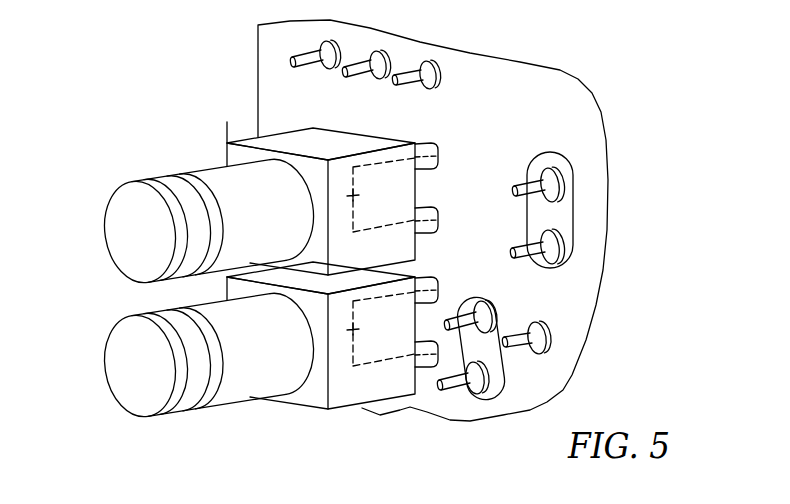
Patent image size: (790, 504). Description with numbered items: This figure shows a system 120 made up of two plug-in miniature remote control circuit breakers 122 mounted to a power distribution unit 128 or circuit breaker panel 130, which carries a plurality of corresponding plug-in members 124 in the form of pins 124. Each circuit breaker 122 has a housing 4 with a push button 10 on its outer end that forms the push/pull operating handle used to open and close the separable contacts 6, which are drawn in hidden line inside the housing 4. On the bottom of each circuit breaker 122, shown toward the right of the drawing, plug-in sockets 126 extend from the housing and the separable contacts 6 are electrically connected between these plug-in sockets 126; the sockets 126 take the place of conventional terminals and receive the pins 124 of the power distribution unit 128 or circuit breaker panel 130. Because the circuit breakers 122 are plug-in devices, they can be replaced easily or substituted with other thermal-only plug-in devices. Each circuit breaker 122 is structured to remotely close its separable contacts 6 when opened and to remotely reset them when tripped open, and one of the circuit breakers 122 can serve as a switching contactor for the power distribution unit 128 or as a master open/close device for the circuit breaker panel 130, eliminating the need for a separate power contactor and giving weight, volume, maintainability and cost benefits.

The system 120 is at (519, 31).
The housing 4 is at (364, 141).
The separable contacts 6 is at (362, 197).
The push button 10 is at (117, 206).
The miniature remote control circuit breaker 122 is at (152, 176).
The plug-in member 124 is at (563, 168).
The plug-in socket 126 is at (430, 147).
The power distribution unit 128 is at (639, 268).
The circuit breaker panel 130 is at (586, 262).